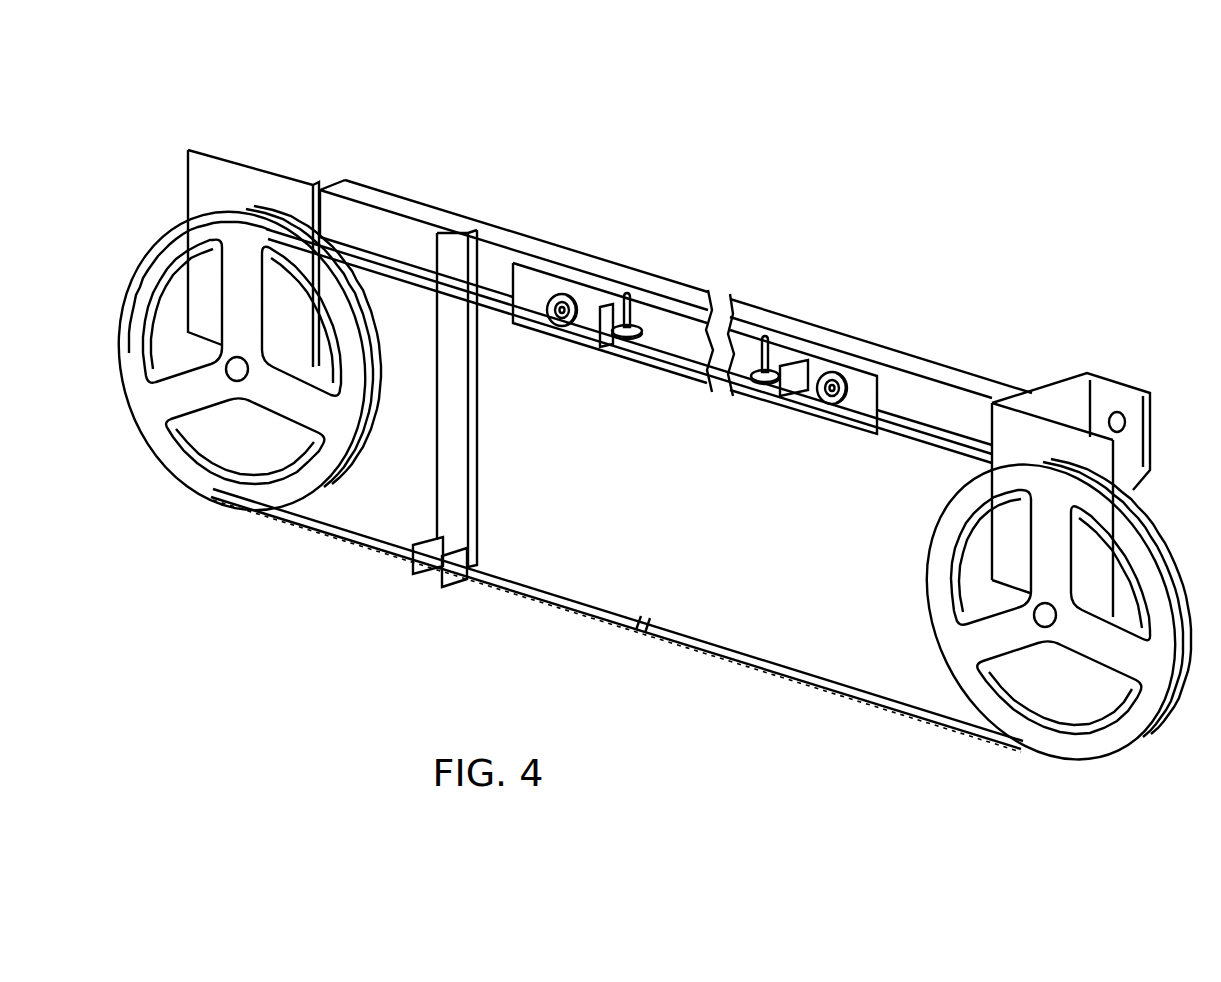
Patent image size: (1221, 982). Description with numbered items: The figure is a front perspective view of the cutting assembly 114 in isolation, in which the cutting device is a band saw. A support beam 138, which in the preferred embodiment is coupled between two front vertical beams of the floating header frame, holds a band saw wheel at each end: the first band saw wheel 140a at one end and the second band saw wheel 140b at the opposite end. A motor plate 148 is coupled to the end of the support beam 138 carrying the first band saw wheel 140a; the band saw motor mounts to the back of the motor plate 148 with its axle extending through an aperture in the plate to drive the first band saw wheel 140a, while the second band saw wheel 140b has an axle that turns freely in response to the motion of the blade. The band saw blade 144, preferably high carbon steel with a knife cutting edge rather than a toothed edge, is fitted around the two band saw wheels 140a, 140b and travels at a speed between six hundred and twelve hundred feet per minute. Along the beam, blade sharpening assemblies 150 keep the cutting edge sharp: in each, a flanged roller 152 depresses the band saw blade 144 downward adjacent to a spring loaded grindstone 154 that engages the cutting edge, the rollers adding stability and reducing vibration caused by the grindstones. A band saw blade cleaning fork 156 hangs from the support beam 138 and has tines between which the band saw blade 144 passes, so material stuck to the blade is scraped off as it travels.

The cutting assembly 114 is at (858, 248).
The support beam 138 is at (498, 233).
The first band saw wheel 140a is at (245, 505).
The second band saw wheel 140b is at (1028, 742).
The band saw blade 144 is at (778, 672).
The motor plate 148 is at (233, 162).
The blade sharpening assembly 150 is at (606, 281).
The flanged roller 152 is at (568, 293).
The spring loaded grindstone 154 is at (633, 326).
The band saw blade cleaning fork 156 is at (466, 447).